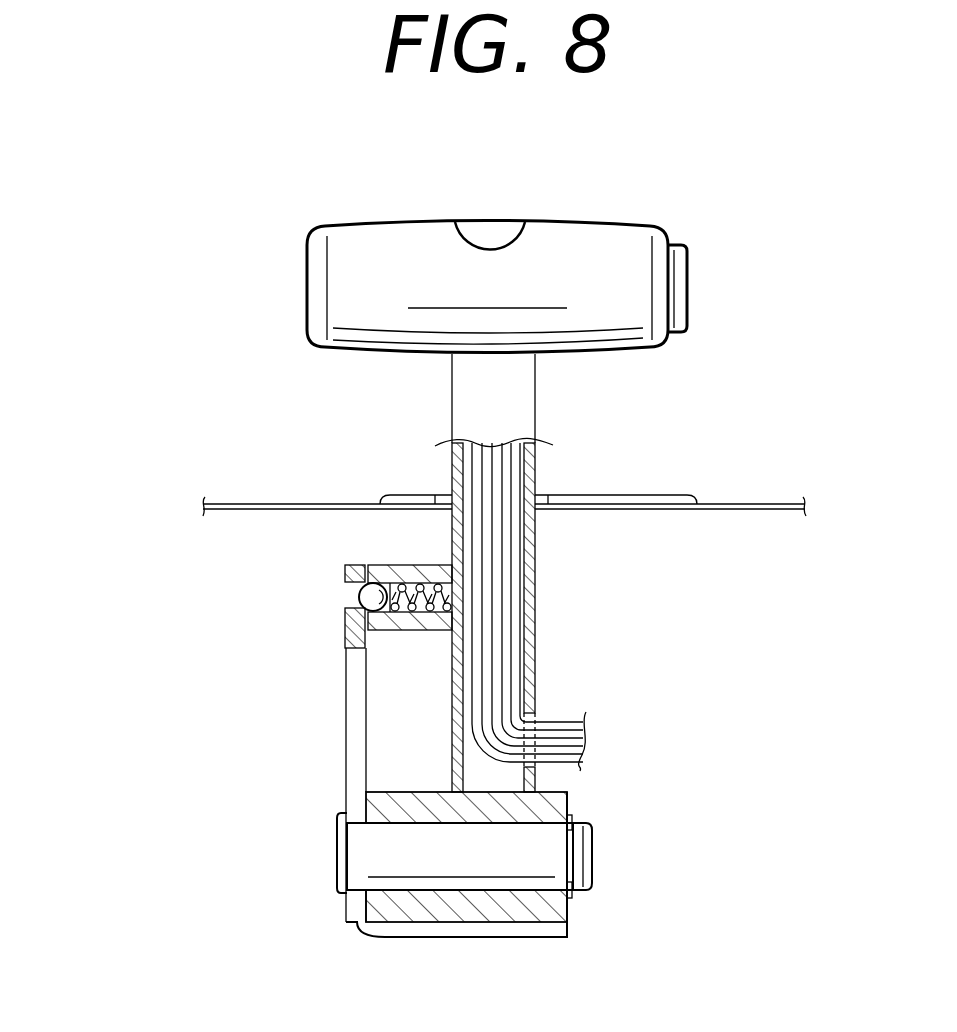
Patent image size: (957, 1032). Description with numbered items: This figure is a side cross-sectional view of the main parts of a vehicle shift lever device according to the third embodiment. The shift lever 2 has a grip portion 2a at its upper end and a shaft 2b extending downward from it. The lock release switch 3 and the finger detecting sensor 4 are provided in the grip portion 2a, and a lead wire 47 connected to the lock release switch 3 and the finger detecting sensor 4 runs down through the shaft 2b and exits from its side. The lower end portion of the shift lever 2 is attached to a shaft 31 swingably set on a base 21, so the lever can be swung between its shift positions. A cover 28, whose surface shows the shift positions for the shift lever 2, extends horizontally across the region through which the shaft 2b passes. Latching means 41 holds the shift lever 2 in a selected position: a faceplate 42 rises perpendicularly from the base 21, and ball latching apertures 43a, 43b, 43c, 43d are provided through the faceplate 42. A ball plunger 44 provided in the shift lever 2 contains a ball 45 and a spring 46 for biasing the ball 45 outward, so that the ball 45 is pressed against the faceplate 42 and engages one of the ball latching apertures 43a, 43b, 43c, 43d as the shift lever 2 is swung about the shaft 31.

The shift lever 2 is at (537, 459).
The grip portion 2a is at (380, 222).
The shaft 2b is at (452, 396).
The lock release switch 3 is at (688, 290).
The finger detecting sensor 4 is at (491, 238).
The base 21 is at (488, 938).
The cover 28 is at (748, 504).
The shaft 31 is at (594, 855).
The latching means 41 is at (247, 575).
The faceplate 42 is at (346, 768).
The ball latching aperture 43a is at (215, 619).
The ball latching aperture 43b is at (373, 597).
The ball latching aperture 43c is at (373, 597).
The ball latching aperture 43d is at (346, 598).
The ball plunger 44 is at (400, 565).
The ball 45 is at (346, 568).
The spring 46 is at (416, 630).
The lead wire 47 is at (550, 722).